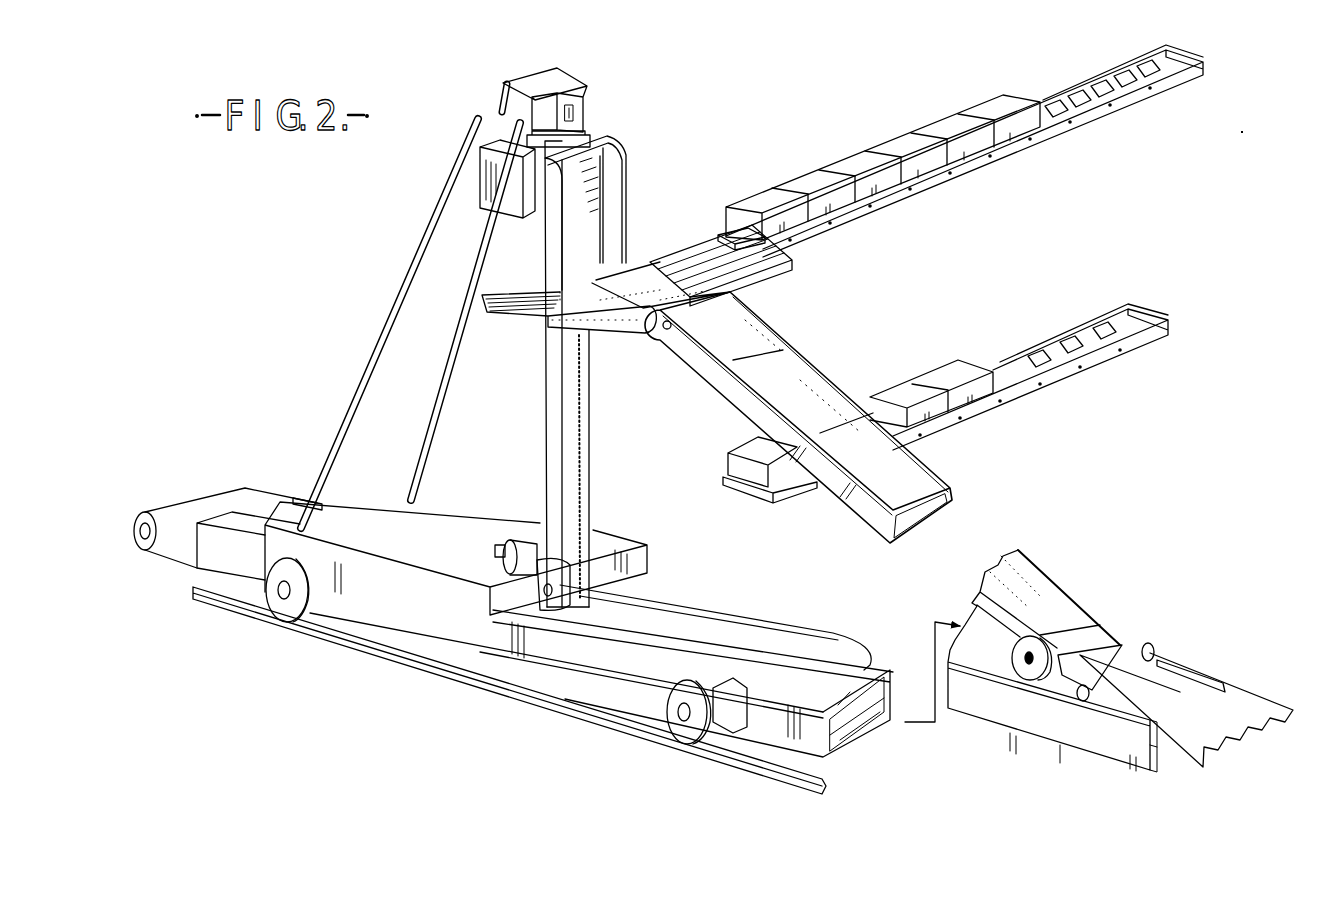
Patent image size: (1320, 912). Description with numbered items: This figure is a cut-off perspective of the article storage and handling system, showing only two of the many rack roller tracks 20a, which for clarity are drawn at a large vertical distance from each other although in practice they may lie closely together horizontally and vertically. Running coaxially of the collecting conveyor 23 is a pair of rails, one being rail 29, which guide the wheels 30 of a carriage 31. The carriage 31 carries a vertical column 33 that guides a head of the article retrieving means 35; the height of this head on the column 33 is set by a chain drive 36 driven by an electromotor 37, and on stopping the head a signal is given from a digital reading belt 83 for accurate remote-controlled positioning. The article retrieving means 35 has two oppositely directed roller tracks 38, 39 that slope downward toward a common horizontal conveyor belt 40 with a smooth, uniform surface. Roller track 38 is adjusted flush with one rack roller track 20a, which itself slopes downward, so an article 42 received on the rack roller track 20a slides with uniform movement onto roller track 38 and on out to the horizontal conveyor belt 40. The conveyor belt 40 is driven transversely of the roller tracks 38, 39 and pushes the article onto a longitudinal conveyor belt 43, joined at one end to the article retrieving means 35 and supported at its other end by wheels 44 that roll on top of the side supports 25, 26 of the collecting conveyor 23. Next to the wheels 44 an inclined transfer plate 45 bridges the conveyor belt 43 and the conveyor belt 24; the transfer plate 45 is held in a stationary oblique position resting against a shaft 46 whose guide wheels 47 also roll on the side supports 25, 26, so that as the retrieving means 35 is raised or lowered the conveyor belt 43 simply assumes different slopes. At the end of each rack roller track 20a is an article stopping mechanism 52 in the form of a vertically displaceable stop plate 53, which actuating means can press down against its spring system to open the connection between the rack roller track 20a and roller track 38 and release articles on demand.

The rack roller track 20a is at (908, 190).
The collecting conveyor 23 is at (830, 697).
The conveyor belt 24 is at (848, 693).
The side support 25 is at (873, 665).
The side support 26 is at (827, 700).
The rail 29 is at (722, 767).
The wheel 30 is at (287, 613).
The carriage 31 is at (445, 510).
The vertical column 33 is at (583, 118).
The article retrieving means 35 is at (618, 283).
The chain drive 36 is at (589, 480).
The electromotor 37 is at (510, 557).
The roller track 38 is at (709, 257).
The roller track 39 is at (532, 318).
The horizontal conveyor belt 40 is at (655, 292).
The article 42 is at (850, 155).
The longitudinal conveyor belt 43 is at (811, 400).
The wheel 44 is at (1080, 653).
The inclined transfer plate 45 is at (1120, 653).
The shaft 46 is at (1147, 662).
The guide wheel 47 is at (1157, 648).
The article stopping mechanism 52 is at (732, 495).
The stop plate 53 is at (741, 236).
The digital reading belt 83 is at (497, 103).